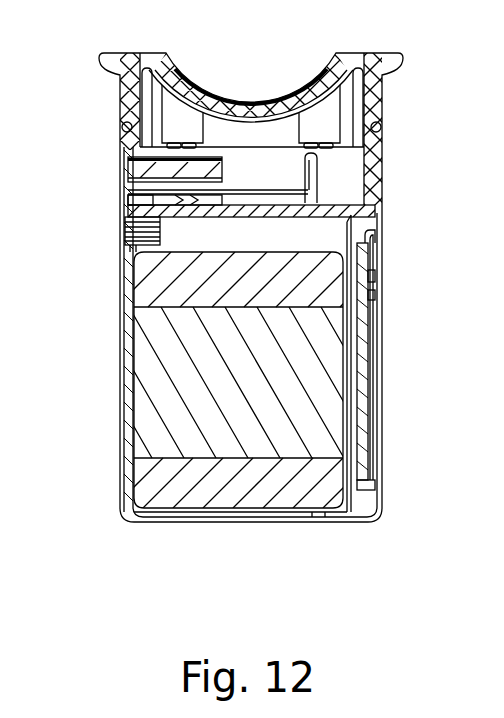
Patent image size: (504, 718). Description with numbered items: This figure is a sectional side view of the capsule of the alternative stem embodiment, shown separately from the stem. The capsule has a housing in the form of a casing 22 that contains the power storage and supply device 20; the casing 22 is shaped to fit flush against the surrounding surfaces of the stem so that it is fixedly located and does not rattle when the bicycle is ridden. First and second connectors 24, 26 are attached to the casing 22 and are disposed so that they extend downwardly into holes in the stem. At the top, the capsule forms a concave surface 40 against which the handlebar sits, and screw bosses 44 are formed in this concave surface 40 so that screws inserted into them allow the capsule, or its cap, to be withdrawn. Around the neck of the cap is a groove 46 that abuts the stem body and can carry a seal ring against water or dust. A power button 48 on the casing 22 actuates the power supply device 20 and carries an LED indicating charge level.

The power storage and supply device 20 is at (247, 475).
The casing 22 is at (120, 478).
The first connector 24 is at (120, 183).
The second connector 26 is at (120, 239).
The concave surface 40 is at (301, 100).
The screw bosses 44 is at (182, 117).
The groove 46 is at (118, 131).
The power button 48 is at (383, 303).